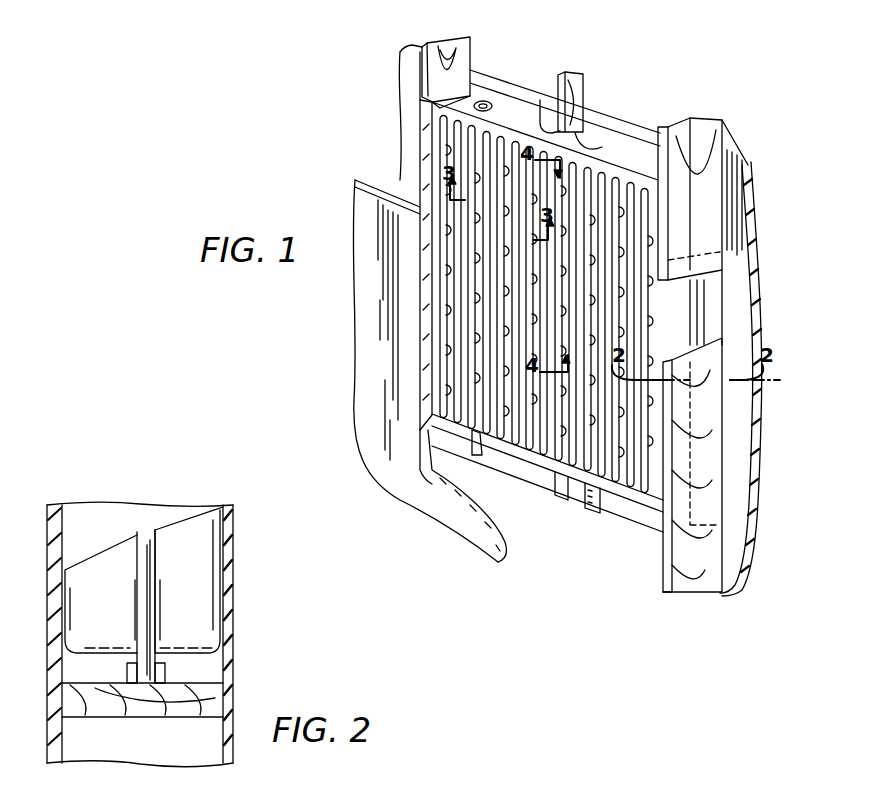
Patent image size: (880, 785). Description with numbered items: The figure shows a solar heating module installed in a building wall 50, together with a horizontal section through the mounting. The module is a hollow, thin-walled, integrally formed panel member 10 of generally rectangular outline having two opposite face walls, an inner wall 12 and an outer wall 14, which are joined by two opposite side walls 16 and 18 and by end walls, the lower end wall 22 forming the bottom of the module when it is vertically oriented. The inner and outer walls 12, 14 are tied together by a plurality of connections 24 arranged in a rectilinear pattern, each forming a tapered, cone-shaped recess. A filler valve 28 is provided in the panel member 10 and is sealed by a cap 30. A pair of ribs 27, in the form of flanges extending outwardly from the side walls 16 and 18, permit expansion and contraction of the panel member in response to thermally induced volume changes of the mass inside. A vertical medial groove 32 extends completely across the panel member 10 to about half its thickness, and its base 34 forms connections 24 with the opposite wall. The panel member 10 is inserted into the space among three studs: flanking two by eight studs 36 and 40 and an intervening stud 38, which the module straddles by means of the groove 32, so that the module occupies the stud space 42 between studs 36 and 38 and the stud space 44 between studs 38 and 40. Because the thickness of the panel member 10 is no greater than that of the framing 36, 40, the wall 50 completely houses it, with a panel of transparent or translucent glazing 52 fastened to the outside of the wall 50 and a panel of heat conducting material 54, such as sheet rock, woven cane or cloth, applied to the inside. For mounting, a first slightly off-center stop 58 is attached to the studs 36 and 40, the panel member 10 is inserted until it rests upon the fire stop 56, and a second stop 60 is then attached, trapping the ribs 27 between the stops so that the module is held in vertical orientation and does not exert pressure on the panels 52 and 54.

In FIG. 1, the hollow panel member 10 is at (518, 135).
In FIG. 1, the inner face wall 12 is at (615, 498).
In FIG. 1, the outer face wall 14 is at (718, 445).
In FIG. 1, the side wall 16 is at (428, 145).
In FIG. 1, the side wall 18 is at (705, 318).
In FIG. 1, the end wall 22 is at (648, 540).
In FIG. 1, the connections 24 is at (540, 440).
In FIG. 1, the ribs 27 is at (700, 290).
In FIG. 2, the ribs 27 is at (148, 598).
In FIG. 1, the filler valve 28 is at (438, 106).
In FIG. 1, the cap 30 is at (484, 98).
In FIG. 1, the vertical medial groove 32 is at (598, 135).
In FIG. 1, the base of the medial groove 34 is at (567, 107).
In FIG. 1, the wall stud 36 is at (415, 75).
In FIG. 1, the intervening stud 38 is at (568, 72).
In FIG. 1, the wall stud 40 is at (700, 136).
In FIG. 1, the stud space 42 is at (512, 68).
In FIG. 1, the stud space 44 is at (642, 118).
In FIG. 1, the wall 50 is at (700, 608).
In FIG. 1, the glazing panel 52 is at (760, 498).
In FIG. 2, the glazing panel 52 is at (238, 612).
In FIG. 1, the heat conducting panel 54 is at (468, 545).
In FIG. 2, the heat conducting panel 54 is at (44, 522).
In FIG. 1, the fire stop 56 is at (638, 528).
In FIG. 2, the first stop 58 is at (168, 680).
In FIG. 2, the second stop 60 is at (120, 672).